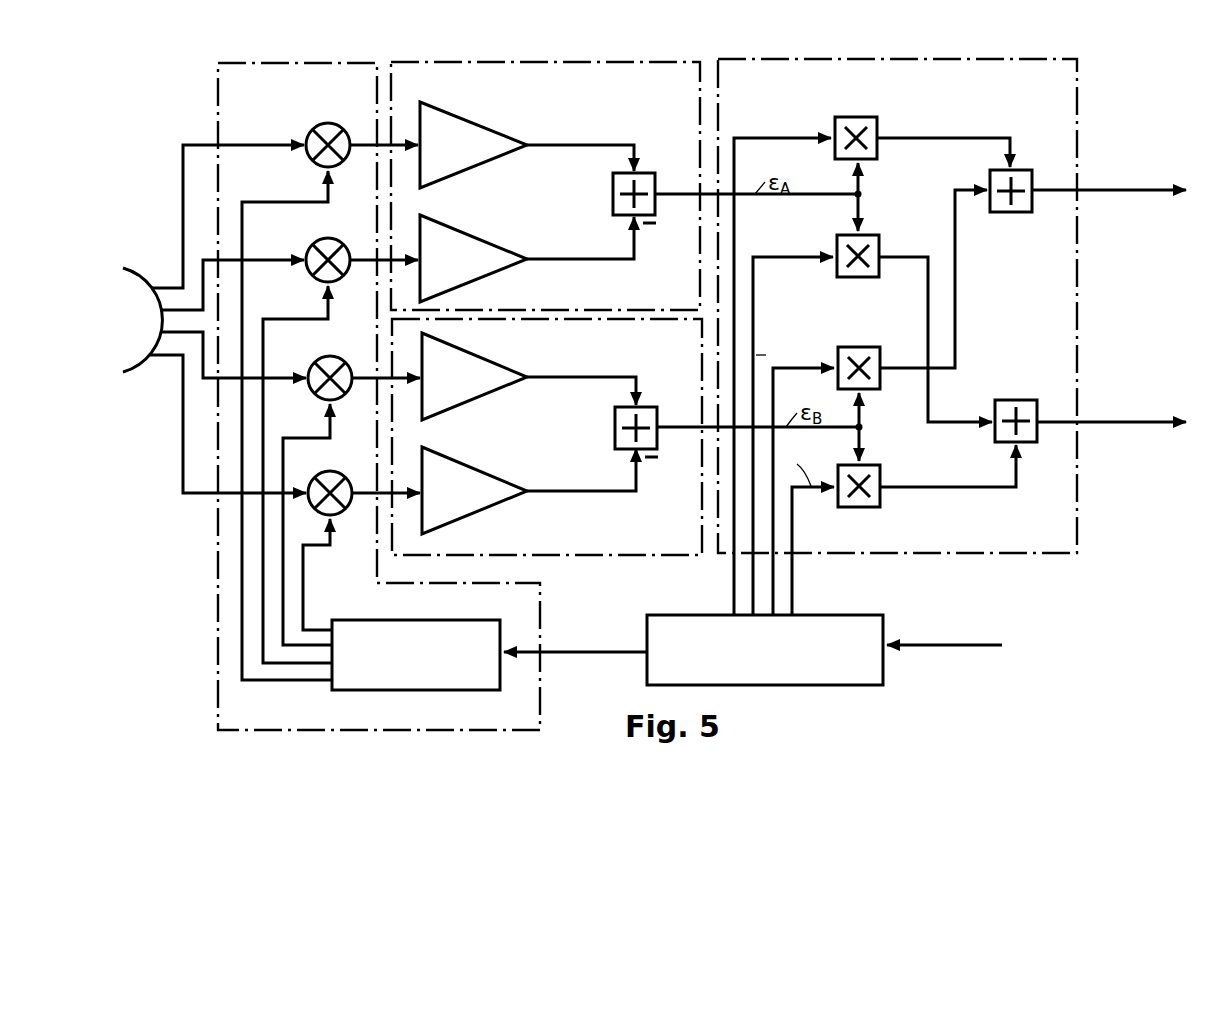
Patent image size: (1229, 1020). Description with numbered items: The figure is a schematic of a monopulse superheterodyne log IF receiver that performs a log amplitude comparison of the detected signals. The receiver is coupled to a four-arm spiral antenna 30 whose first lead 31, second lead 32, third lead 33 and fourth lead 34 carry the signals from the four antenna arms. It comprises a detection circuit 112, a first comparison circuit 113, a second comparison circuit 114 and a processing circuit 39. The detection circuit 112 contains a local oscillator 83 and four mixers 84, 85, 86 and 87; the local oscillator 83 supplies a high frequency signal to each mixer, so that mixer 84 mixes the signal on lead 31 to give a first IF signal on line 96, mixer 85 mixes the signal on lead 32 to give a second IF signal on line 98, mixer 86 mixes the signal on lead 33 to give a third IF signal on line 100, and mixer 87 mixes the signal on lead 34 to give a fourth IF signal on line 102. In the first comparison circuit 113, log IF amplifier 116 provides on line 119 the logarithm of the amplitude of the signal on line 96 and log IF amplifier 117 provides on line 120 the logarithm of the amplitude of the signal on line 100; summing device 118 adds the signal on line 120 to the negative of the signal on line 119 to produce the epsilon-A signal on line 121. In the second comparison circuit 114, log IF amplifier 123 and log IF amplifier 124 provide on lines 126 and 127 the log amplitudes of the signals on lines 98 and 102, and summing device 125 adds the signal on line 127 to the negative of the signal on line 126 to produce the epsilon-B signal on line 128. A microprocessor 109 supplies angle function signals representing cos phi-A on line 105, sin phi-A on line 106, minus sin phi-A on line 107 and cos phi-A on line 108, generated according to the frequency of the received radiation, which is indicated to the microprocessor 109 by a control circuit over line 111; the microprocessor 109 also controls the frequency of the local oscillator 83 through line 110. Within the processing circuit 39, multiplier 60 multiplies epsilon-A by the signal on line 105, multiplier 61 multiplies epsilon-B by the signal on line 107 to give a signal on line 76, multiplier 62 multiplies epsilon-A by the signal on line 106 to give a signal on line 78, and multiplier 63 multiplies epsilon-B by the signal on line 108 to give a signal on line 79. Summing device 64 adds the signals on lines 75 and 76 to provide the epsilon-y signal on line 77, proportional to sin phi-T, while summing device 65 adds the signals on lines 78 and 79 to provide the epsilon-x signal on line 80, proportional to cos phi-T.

The four-arm spiral antenna 30 is at (134, 267).
The first lead 31 is at (202, 270).
The second lead 32 is at (167, 357).
The third lead 33 is at (168, 288).
The fourth lead 34 is at (203, 362).
The processing circuit 39 is at (878, 59).
The multiplier 60 is at (868, 117).
The multiplier 61 is at (868, 347).
The multiplier 62 is at (868, 235).
The multiplier 63 is at (868, 465).
The summing device 64 is at (1005, 212).
The summing device 65 is at (1021, 400).
The line 75 is at (933, 138).
The line 76 is at (957, 342).
The line 77 is at (1120, 193).
The line 78 is at (925, 272).
The line 79 is at (925, 485).
The line 80 is at (1130, 420).
The local oscillator 83 is at (440, 620).
The mixer 84 is at (335, 239).
The mixer 85 is at (337, 473).
The mixer 86 is at (335, 124).
The mixer 87 is at (337, 357).
The line 96 is at (363, 264).
The line 98 is at (367, 497).
The line 100 is at (363, 149).
The line 102 is at (365, 382).
The line 105 is at (734, 588).
The line 106 is at (753, 560).
The line 107 is at (775, 571).
The line 108 is at (792, 597).
The microprocessor 109 is at (886, 634).
The line 110 is at (583, 650).
The line 111 is at (985, 643).
The detection circuit 112 is at (298, 63).
The first comparison circuit 113 is at (536, 63).
The second comparison circuit 114 is at (586, 556).
The log IF amplifier 116 is at (473, 234).
The log IF amplifier 117 is at (473, 118).
The summing device 118 is at (613, 184).
The line 119 is at (546, 258).
The line 120 is at (546, 143).
The line 121 is at (690, 197).
The log IF amplifier 123 is at (480, 470).
The log IF amplifier 124 is at (480, 354).
The summing device 125 is at (615, 416).
The line 126 is at (548, 490).
The line 127 is at (550, 375).
The line 128 is at (683, 431).